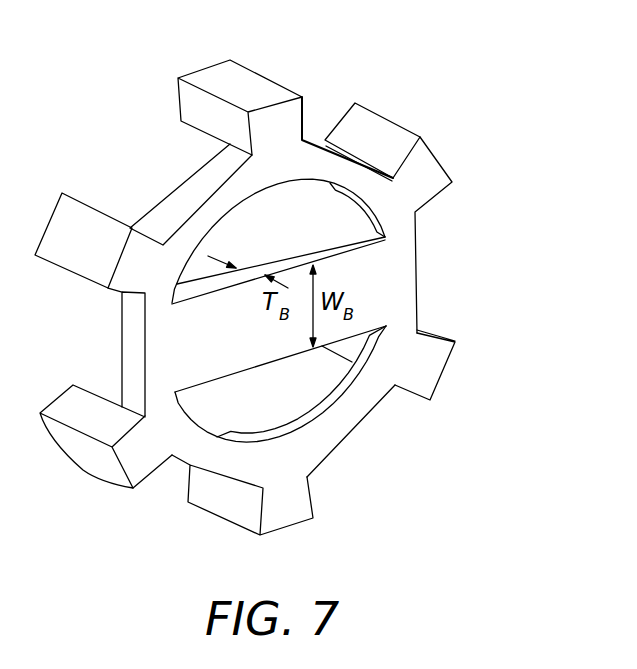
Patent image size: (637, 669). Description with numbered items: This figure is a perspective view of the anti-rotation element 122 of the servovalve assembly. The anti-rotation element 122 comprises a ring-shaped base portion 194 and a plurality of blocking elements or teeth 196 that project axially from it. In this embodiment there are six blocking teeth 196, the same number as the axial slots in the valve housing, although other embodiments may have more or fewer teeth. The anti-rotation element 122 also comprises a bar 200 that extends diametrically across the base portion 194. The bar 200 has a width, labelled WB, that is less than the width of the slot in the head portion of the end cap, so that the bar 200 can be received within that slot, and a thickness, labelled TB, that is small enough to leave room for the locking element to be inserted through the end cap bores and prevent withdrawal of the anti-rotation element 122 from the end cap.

The anti-rotation element 122 is at (275, 303).
The base portion 194 is at (455, 231).
The blocking teeth 196 is at (258, 82).
The bar 200 is at (382, 282).